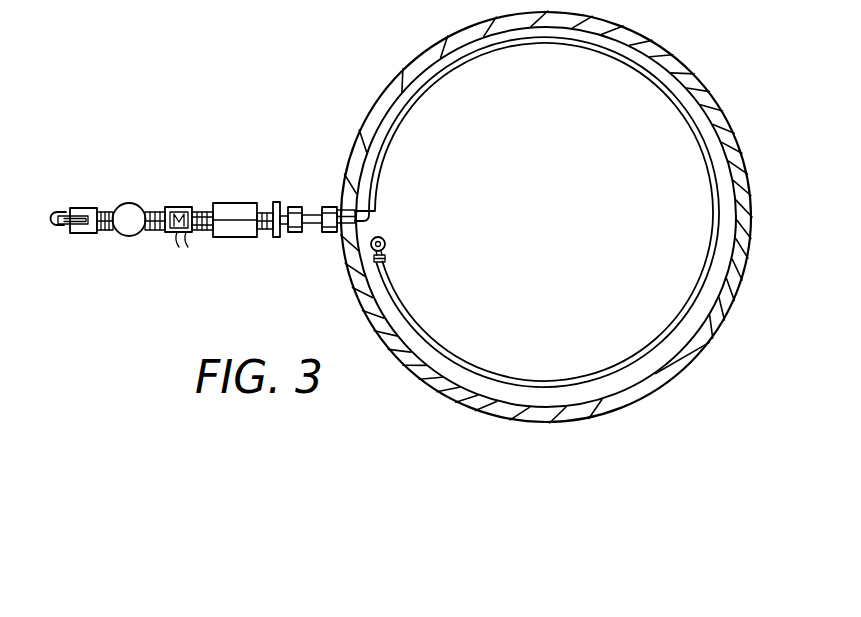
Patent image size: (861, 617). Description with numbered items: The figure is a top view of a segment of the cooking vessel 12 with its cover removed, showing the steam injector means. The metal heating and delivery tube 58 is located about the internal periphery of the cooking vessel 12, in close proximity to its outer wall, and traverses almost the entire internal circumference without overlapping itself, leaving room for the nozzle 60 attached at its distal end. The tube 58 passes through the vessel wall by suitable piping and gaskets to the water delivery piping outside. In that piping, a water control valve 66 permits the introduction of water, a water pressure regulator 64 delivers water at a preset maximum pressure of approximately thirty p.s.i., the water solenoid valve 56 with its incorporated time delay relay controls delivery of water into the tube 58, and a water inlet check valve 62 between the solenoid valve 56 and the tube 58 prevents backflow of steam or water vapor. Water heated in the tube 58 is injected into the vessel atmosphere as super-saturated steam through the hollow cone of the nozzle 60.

The cooking vessel 12 is at (688, 63).
The metal heating and delivery tube 58 is at (672, 100).
The nozzle 60 is at (387, 245).
The water solenoid valve 56 is at (181, 215).
The water inlet check valve 62 is at (233, 228).
The water pressure regulator 64 is at (128, 229).
The water control valve 66 is at (84, 205).